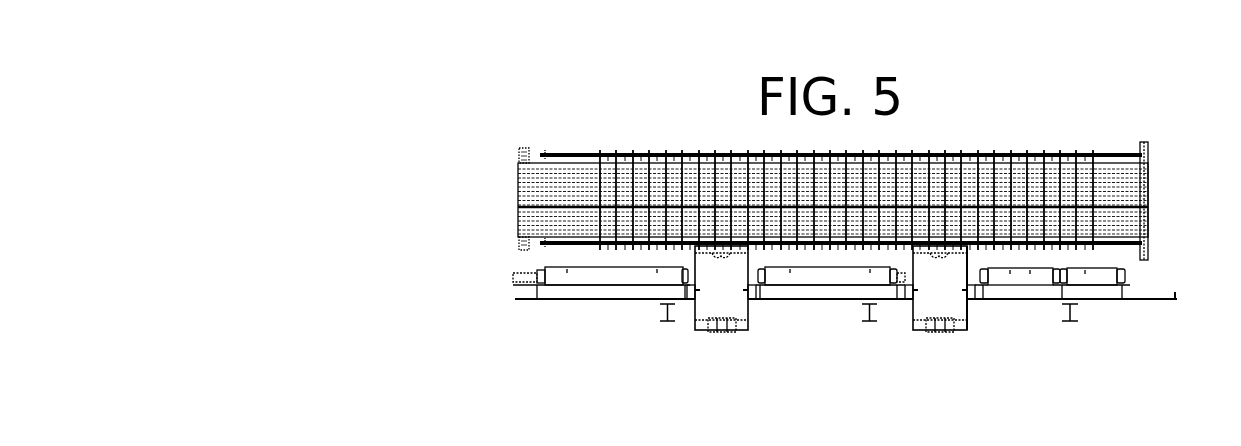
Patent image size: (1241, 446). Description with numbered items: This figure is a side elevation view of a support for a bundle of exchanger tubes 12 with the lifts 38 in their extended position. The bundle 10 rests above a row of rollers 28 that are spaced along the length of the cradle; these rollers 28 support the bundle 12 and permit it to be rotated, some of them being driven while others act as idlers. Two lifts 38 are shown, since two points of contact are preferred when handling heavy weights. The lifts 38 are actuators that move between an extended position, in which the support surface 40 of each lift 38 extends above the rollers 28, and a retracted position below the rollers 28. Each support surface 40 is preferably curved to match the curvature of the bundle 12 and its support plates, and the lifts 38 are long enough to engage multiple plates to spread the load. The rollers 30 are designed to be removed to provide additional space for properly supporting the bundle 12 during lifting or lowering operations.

The bundle 10 is at (458, 294).
The bundle of exchanger tubes 12 is at (1118, 190).
The rollers 28 is at (605, 282).
The rollers 30 is at (1090, 278).
The lifts 38 is at (935, 305).
The support surface 40 is at (950, 250).